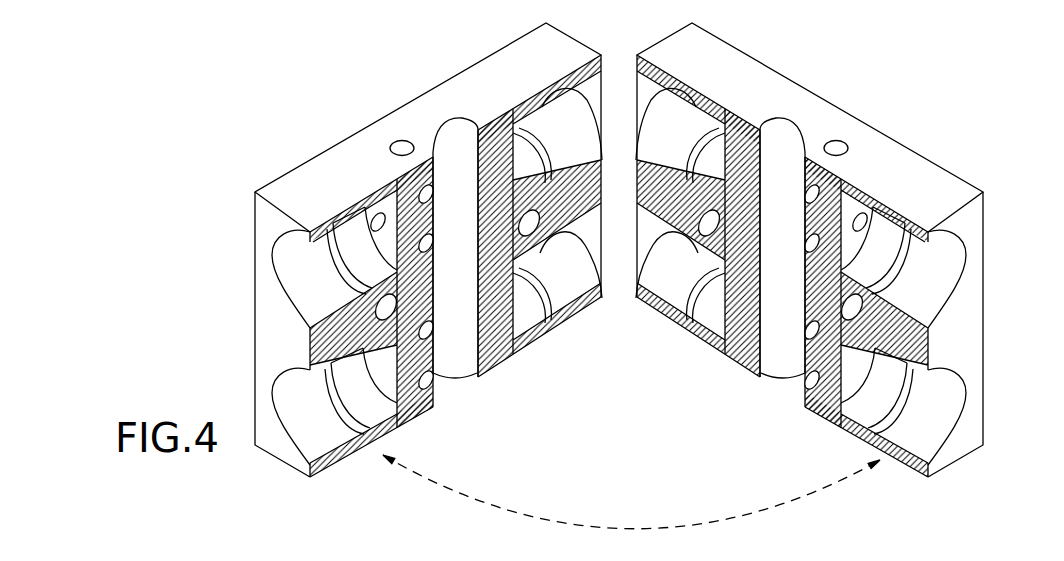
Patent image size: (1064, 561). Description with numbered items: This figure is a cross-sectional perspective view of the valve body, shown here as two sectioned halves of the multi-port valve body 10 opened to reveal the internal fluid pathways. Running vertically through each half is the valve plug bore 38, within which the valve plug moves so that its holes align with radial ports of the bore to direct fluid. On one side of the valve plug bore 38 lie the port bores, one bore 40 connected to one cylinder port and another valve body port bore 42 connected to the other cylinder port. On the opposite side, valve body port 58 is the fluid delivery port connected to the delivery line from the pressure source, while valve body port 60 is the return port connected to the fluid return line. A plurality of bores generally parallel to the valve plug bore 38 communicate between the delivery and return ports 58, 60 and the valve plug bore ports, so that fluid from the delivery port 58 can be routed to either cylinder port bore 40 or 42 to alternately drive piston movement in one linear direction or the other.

The mold half 10 is at (253, 128).
The valve plug bore 38 is at (440, 140).
The valve body port bore 40 is at (557, 127).
The valve body port bore 42 is at (557, 263).
The valve body port 58 is at (293, 263).
The valve body port 60 is at (293, 402).